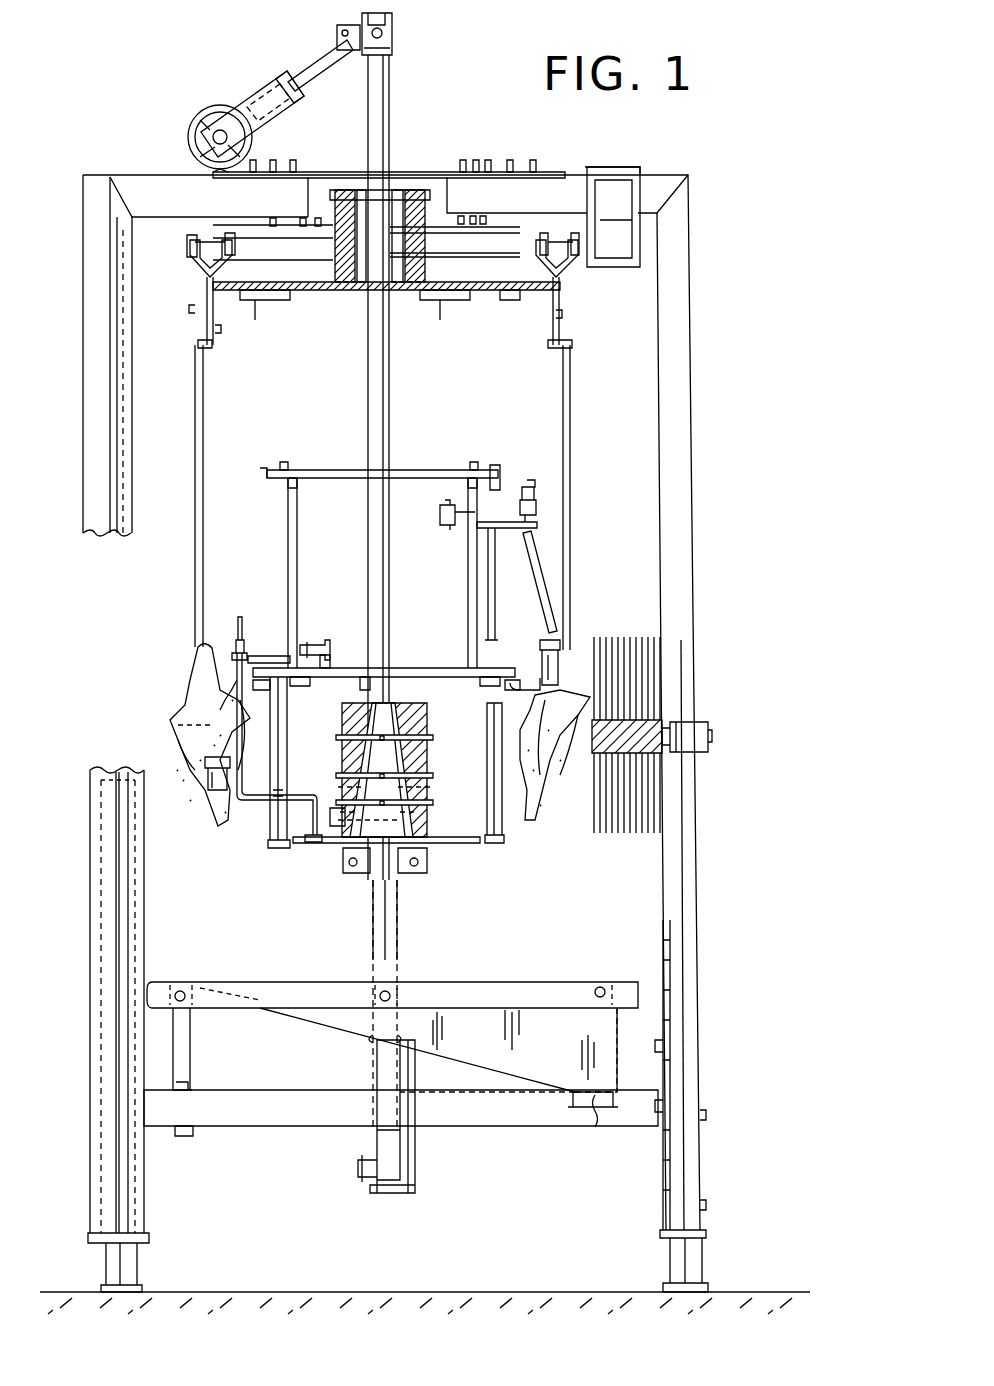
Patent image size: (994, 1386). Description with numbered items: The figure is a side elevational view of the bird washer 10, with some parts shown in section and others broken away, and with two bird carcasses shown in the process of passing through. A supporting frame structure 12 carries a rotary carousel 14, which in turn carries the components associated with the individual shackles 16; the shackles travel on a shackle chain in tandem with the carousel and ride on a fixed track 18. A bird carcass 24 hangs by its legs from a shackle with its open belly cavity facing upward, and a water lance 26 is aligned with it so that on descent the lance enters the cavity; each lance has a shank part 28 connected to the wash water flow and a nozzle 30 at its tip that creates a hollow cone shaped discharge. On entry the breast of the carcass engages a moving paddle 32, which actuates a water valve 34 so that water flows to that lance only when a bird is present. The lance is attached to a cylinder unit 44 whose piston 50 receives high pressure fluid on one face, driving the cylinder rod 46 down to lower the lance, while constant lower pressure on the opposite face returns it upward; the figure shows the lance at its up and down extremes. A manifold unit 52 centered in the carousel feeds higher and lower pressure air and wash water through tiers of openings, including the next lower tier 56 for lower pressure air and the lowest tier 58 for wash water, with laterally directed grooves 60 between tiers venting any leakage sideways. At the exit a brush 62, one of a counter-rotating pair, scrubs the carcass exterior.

The bird washer 10 is at (712, 142).
The supporting frame structure 12 is at (690, 318).
The rotary carousel 14 is at (333, 462).
The shackles 16 is at (203, 410).
The fixed track 18 is at (500, 242).
The bird carcass 24 is at (183, 732).
The water lance 26 is at (533, 540).
The shank part 28 is at (550, 592).
The nozzle 30 is at (527, 652).
The moving paddle 32 is at (250, 835).
The water valve 34 is at (428, 736).
The cylinder unit 44 is at (500, 710).
The cylinder rod 46 is at (490, 576).
The piston 50 is at (340, 788).
The manifold unit 52 is at (407, 702).
The next lower tier 56 is at (430, 770).
The lowest tier 58 is at (420, 820).
The laterally directed grooves 60 is at (343, 757).
The brush 62 is at (620, 650).